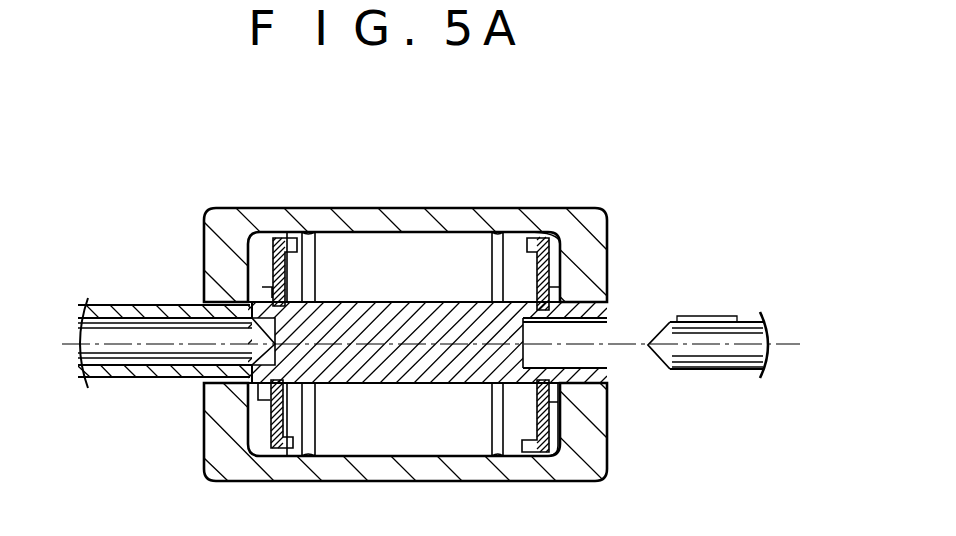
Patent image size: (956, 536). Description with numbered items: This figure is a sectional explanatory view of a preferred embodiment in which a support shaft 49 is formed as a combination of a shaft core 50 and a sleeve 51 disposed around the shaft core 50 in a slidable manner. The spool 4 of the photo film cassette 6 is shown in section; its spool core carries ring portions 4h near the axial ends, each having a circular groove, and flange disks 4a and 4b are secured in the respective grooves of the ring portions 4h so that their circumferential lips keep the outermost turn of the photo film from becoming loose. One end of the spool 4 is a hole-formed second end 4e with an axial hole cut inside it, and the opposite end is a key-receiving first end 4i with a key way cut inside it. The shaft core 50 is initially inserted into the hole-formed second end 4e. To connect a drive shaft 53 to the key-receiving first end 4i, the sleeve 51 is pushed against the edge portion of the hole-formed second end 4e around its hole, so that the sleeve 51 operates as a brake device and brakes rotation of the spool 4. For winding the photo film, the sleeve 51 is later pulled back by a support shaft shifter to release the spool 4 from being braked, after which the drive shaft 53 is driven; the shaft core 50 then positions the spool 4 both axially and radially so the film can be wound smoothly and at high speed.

The spool 4 is at (376, 302).
The flange disk 4a is at (545, 240).
The flange disk 4b is at (280, 240).
The hole-formed second end 4e is at (335, 378).
The ring portion 4h is at (560, 397).
The key-receiving first end 4i is at (598, 355).
The photo film cassette 6 is at (374, 208).
The support shaft 49 is at (97, 378).
The shaft core 50 is at (135, 320).
The sleeve 51 is at (146, 380).
The drive shaft 53 is at (708, 318).